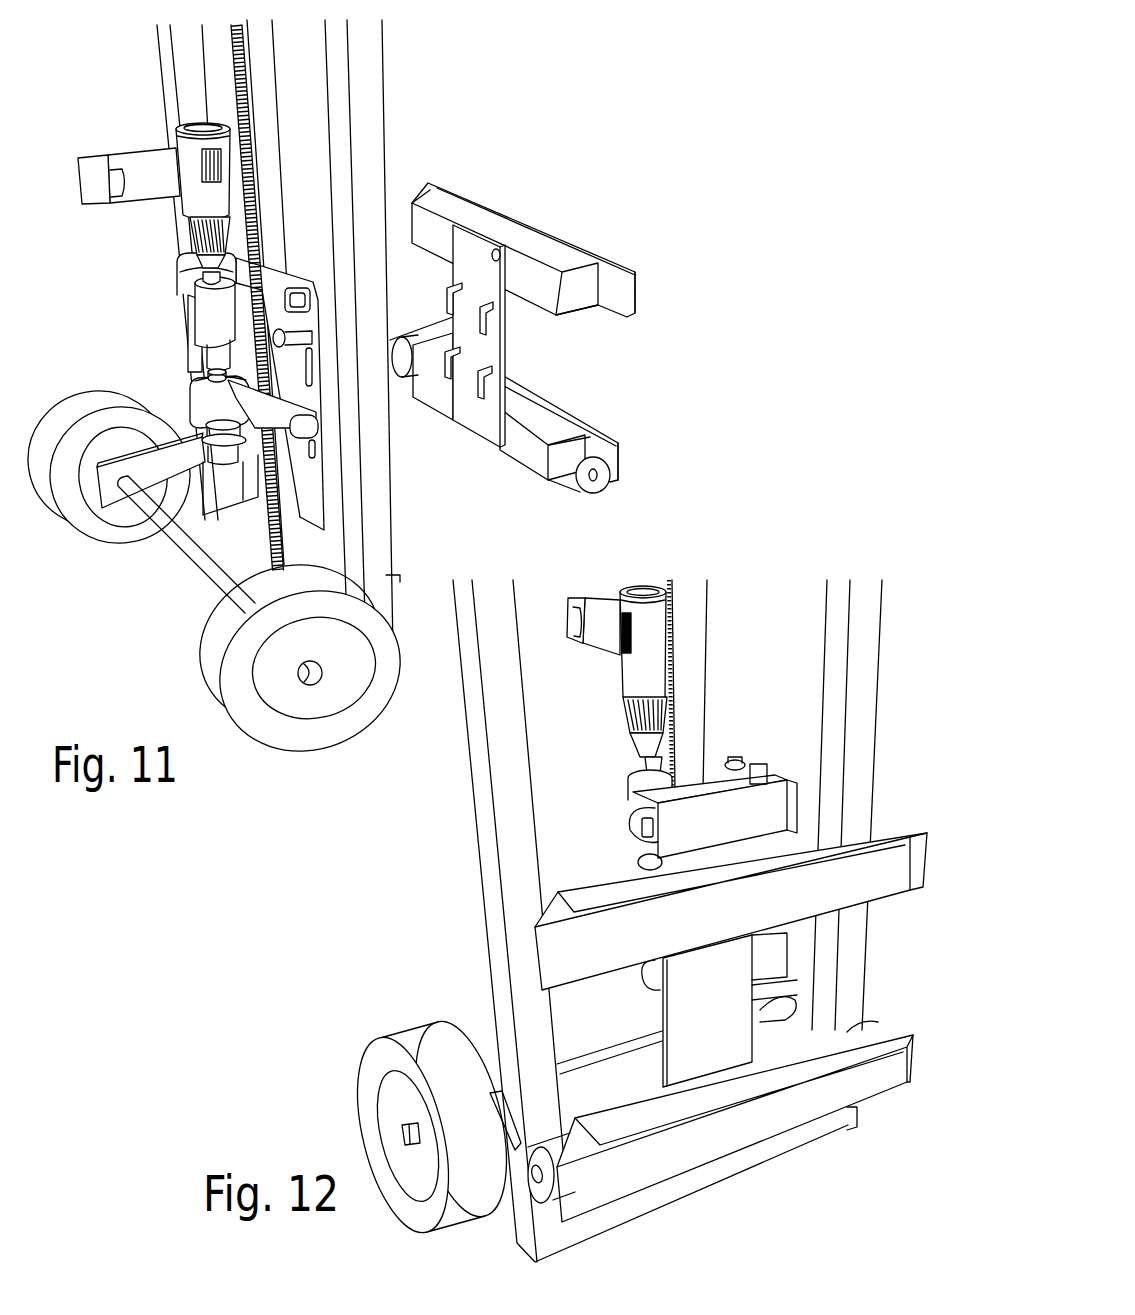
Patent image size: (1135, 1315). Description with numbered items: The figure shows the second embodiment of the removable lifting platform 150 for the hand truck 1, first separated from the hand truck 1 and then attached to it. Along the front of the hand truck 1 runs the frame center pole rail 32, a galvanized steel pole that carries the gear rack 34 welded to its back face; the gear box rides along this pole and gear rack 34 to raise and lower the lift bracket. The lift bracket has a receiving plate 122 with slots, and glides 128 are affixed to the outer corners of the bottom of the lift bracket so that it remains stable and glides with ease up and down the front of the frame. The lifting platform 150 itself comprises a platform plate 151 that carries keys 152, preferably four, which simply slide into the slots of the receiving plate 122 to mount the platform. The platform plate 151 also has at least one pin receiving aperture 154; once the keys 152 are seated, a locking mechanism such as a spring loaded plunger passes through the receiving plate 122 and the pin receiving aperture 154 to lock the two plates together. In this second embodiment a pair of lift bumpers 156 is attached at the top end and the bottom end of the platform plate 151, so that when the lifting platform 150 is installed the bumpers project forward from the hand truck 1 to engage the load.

In FIG. 11, the hand truck 1 is at (162, 282).
In FIG. 12, the hand truck 1 is at (420, 842).
In FIG. 11, the frame center pole rail 32 is at (272, 222).
In FIG. 12, the frame center pole rail 32 is at (695, 650).
In FIG. 11, the gear rack 34 is at (232, 93).
In FIG. 11, the receiving plate 122 is at (312, 493).
In FIG. 12, the receiving plate 122 is at (778, 802).
In FIG. 11, the glide 128 is at (590, 488).
In FIG. 12, the glide 128 is at (548, 1148).
In FIG. 11, the lifting platform 150 is at (570, 334).
In FIG. 11, the platform plate 151 is at (490, 343).
In FIG. 12, the platform plate 151 is at (723, 1030).
In FIG. 11, the keys 152 is at (482, 397).
In FIG. 11, the pin receiving aperture 154 is at (497, 250).
In FIG. 11, the lift bumpers 156 is at (632, 294).
In FIG. 12, the lift bumpers 156 is at (912, 858).